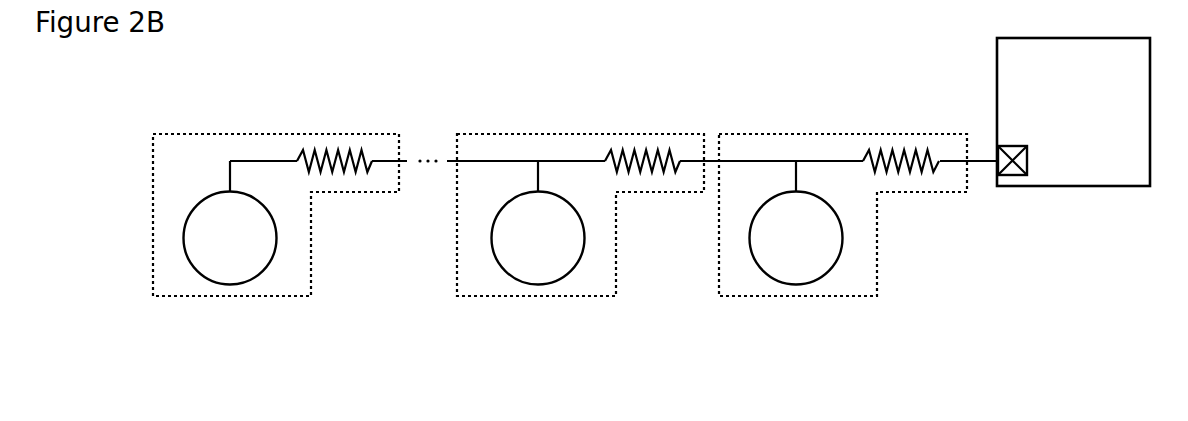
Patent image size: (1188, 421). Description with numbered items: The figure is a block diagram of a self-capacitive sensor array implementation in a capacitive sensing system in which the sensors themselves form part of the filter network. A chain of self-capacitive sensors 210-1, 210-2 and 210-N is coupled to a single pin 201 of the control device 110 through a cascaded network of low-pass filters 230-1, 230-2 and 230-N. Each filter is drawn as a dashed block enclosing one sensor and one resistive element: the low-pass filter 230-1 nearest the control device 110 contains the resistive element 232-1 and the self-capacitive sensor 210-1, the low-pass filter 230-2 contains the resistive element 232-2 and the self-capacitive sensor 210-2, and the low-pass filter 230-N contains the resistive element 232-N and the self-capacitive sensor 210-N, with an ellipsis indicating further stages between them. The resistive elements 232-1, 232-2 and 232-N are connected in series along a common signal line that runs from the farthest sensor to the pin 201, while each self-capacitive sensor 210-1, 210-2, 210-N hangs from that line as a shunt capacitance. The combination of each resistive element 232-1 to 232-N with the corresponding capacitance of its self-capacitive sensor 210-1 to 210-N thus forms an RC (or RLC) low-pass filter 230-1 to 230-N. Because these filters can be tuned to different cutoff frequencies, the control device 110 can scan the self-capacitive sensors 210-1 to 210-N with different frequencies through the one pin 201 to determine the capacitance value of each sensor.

The low-pass filter 230-N is at (192, 134).
The resistive element 232-N is at (330, 163).
The self-capacitive sensor 210-N is at (202, 248).
The low-pass filter 230-2 is at (515, 134).
The resistive element 232-2 is at (635, 162).
The self-capacitive sensor 210-2 is at (511, 248).
The low-pass filter 230-1 is at (827, 134).
The resistive element 232-1 is at (910, 168).
The self-capacitive sensor 210-1 is at (770, 248).
The control device 110 is at (1132, 122).
The pin 201 is at (1019, 177).